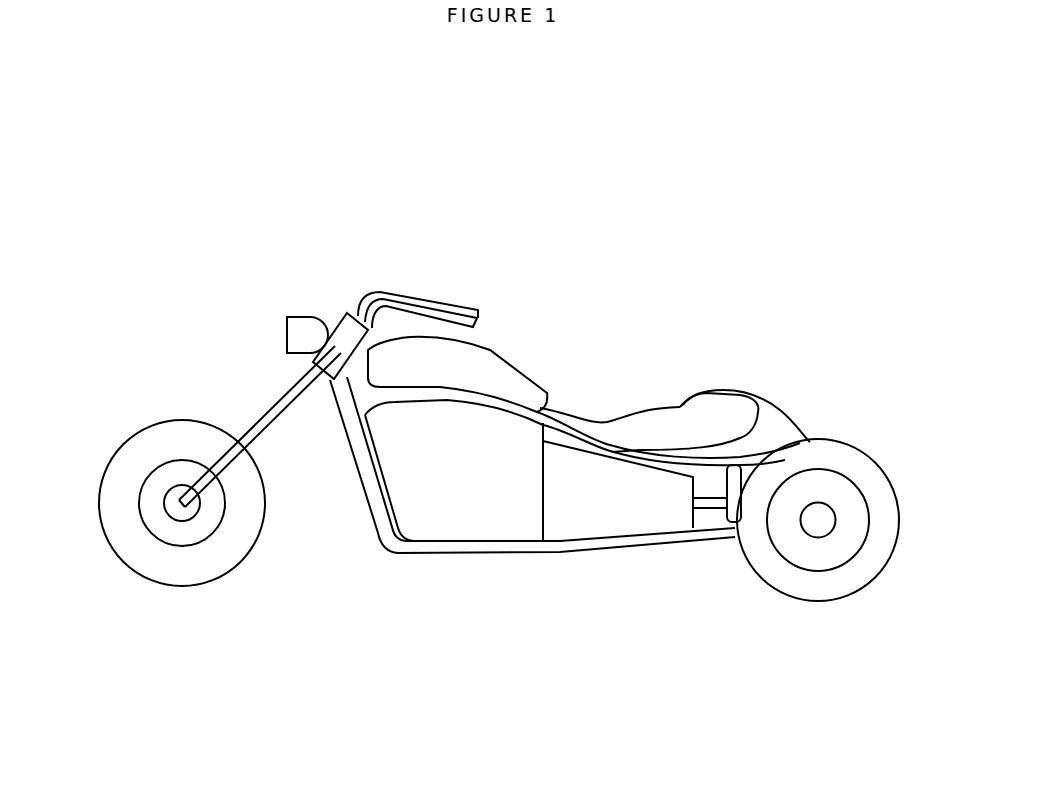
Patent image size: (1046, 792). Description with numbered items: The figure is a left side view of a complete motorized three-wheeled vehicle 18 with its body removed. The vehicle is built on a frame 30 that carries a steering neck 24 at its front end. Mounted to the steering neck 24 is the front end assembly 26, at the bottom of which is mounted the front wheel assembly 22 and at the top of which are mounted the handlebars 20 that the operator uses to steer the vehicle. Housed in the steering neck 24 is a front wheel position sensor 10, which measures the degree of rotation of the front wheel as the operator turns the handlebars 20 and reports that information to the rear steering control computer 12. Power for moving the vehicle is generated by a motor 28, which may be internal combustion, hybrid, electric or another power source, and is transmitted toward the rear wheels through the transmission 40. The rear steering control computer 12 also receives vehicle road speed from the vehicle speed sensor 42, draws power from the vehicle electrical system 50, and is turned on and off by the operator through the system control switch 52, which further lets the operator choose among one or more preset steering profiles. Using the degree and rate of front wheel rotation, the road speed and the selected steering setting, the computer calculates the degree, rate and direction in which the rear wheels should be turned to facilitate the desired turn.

The front wheel position sensor 10 is at (322, 357).
The rear steering control computer 12 is at (602, 450).
The motorized three-wheeled vehicle 18 is at (538, 372).
The handlebars 20 is at (393, 293).
The front wheel assembly 22 is at (143, 482).
The steering neck 24 is at (342, 352).
The front end assembly 26 is at (267, 398).
The motor 28 is at (453, 470).
The frame 30 is at (353, 467).
The transmission 40 is at (677, 500).
The vehicle speed sensor 42 is at (810, 532).
The vehicle electrical system 50 is at (622, 455).
The system control switch 52 is at (445, 303).